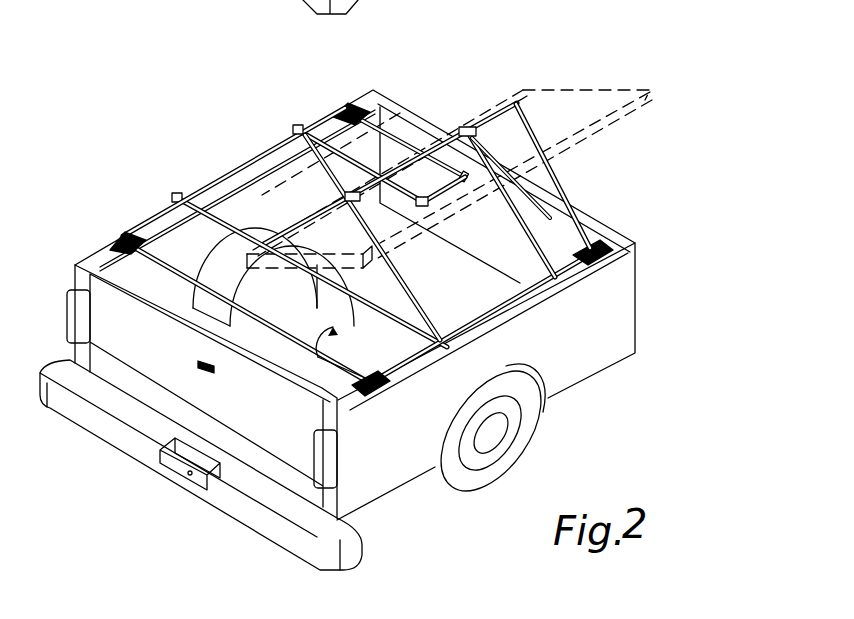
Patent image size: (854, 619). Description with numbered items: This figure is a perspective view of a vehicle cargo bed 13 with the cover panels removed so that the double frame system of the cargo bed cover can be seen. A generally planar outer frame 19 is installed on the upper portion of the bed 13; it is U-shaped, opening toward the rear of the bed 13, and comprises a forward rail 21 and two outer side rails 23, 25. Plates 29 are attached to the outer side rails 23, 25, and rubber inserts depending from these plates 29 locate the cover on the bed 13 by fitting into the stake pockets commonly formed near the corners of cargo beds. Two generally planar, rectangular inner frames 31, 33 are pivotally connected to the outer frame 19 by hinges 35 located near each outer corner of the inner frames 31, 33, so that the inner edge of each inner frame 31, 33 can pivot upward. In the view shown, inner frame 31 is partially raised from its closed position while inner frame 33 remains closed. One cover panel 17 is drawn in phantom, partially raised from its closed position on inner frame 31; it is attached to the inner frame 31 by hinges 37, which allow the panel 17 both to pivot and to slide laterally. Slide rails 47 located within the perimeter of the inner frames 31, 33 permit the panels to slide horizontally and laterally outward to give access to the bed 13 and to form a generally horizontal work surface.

The cargo bed 13 is at (638, 297).
The cover panel 17 is at (560, 88).
The outer frame 19 is at (405, 108).
The forward rail 21 is at (427, 130).
The outer side rail 23 is at (263, 175).
The outer side rail 25 is at (507, 303).
The plate 29 is at (373, 390).
The inner frame 31 is at (563, 178).
The inner frame 33 is at (175, 268).
The hinge 35 is at (393, 400).
The hinge 37 is at (351, 192).
The slide rail 47 is at (525, 220).